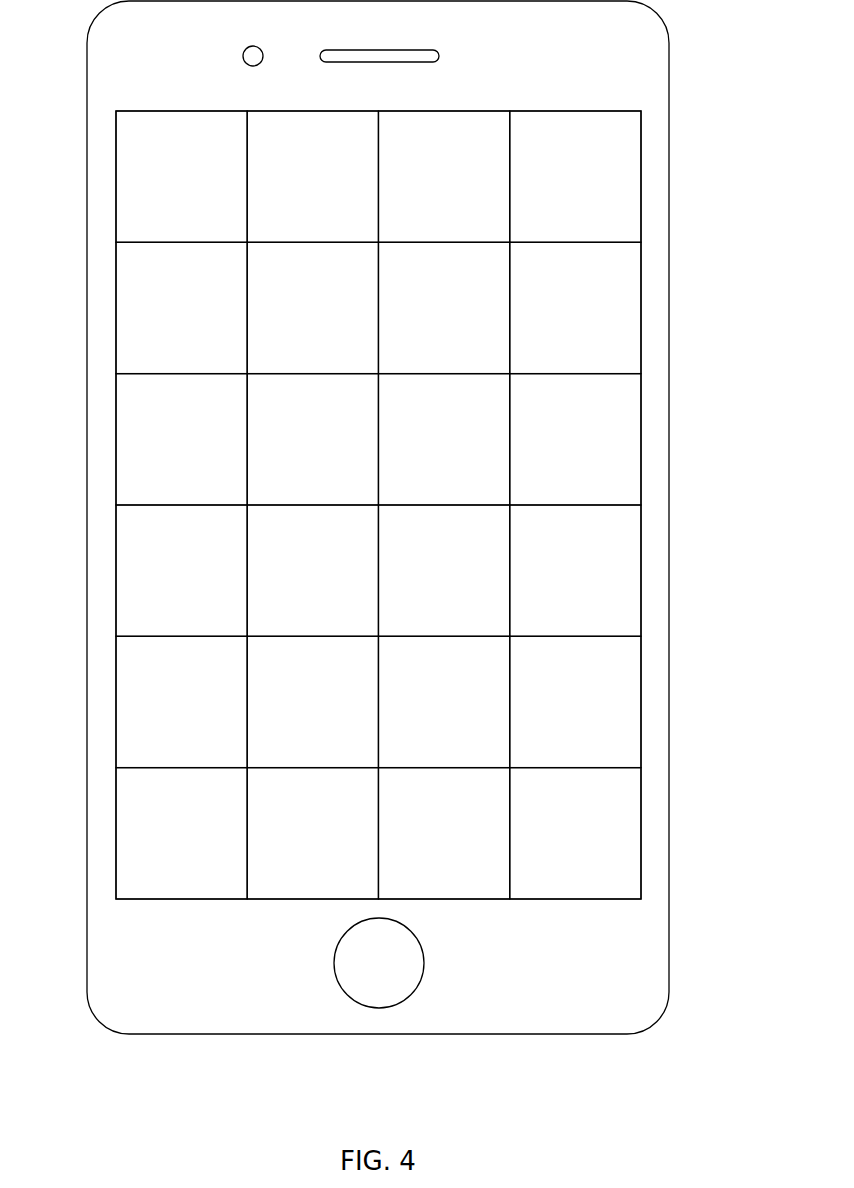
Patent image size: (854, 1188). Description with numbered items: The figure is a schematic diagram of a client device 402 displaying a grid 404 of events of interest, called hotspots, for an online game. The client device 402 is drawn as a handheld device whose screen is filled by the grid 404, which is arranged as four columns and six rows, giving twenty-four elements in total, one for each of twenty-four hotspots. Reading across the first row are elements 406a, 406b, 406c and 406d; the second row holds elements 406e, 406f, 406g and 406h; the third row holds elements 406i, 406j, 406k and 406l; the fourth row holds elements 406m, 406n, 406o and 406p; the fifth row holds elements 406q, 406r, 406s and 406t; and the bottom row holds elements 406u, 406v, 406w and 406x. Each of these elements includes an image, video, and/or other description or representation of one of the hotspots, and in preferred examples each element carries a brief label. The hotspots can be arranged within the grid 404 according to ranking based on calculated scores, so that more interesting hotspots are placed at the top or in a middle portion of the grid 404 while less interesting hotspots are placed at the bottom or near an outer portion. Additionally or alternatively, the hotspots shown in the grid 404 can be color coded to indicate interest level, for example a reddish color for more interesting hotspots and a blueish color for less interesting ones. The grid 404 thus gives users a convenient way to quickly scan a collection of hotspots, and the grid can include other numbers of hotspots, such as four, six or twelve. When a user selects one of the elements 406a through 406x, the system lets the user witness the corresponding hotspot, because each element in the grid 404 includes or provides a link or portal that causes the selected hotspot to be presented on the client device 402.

The client device 402 is at (669, 188).
The grid 404 is at (110, 274).
The element 406a is at (206, 188).
The element 406b is at (337, 188).
The element 406c is at (421, 188).
The element 406d is at (600, 188).
The element 406e is at (206, 319).
The element 406f is at (291, 319).
The element 406g is at (420, 319).
The element 406h is at (600, 319).
The element 406i is at (161, 450).
The element 406j is at (334, 450).
The element 406k is at (420, 450).
The element 406l is at (596, 450).
The element 406m is at (154, 582).
The element 406n is at (337, 582).
The element 406o is at (420, 582).
The element 406p is at (600, 582).
The element 406q is at (206, 713).
The element 406r is at (335, 713).
The element 406s is at (421, 713).
The element 406t is at (597, 713).
The element 406u is at (157, 844).
The element 406v is at (337, 844).
The element 406w is at (418, 844).
The element 406x is at (599, 844).